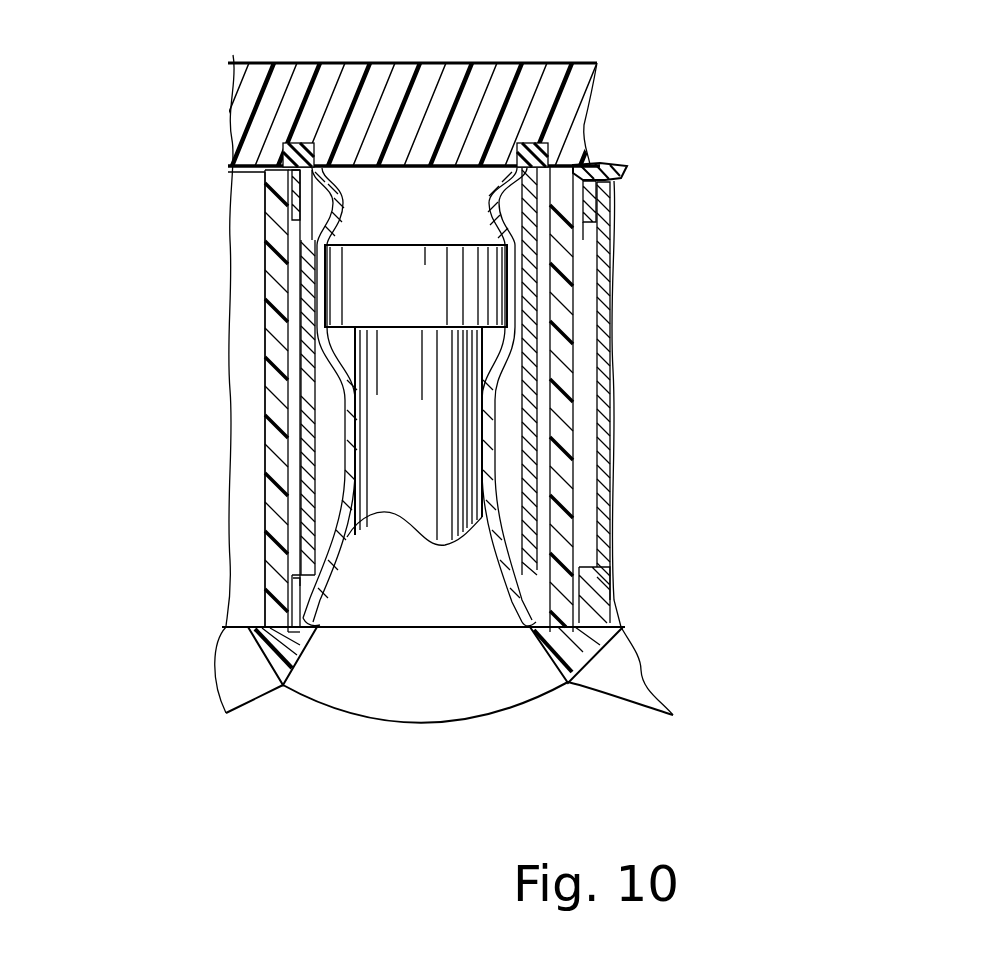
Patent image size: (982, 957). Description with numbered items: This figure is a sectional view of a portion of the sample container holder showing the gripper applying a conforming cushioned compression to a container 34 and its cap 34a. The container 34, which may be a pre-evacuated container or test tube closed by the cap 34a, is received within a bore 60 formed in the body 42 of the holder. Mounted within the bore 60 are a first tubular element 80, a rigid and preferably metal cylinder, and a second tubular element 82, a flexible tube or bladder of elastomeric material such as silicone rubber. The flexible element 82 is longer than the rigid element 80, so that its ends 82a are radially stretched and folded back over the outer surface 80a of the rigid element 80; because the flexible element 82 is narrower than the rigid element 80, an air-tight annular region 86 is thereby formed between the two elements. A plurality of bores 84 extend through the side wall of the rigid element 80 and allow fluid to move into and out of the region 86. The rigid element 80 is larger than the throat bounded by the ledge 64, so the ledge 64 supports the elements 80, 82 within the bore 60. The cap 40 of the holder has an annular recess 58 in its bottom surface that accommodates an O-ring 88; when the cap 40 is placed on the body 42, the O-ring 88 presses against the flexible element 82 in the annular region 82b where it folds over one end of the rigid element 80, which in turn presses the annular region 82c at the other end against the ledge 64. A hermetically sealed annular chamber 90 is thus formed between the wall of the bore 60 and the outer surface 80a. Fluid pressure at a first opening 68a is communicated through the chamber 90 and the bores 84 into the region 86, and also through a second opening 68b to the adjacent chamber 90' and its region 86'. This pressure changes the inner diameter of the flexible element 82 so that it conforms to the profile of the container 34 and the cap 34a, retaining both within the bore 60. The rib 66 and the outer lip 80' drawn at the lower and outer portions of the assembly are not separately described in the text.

The container 34 is at (437, 503).
The cap 34a is at (437, 265).
The cap 40 is at (600, 78).
The body 42 is at (620, 377).
The annular recess 58 is at (548, 134).
The bore 60 is at (386, 601).
The ledge 64 is at (288, 630).
The right rib 66 is at (552, 662).
The first opening 68a is at (275, 370).
The second opening 68b is at (562, 365).
The first tubular element 80 is at (613, 397).
The outer sealing lip 80' is at (667, 394).
The outer surface 80a is at (306, 284).
The second tubular element 82 is at (496, 453).
The ends 82a is at (292, 215).
The annular region 82b is at (290, 157).
The annular region 82c is at (300, 590).
The bores 84 is at (308, 388).
The annular region 86 is at (219, 565).
The region 86' is at (632, 371).
The O-ring 88 is at (590, 157).
The annular chamber 90 is at (210, 407).
The adjacent chamber 90' is at (673, 391).